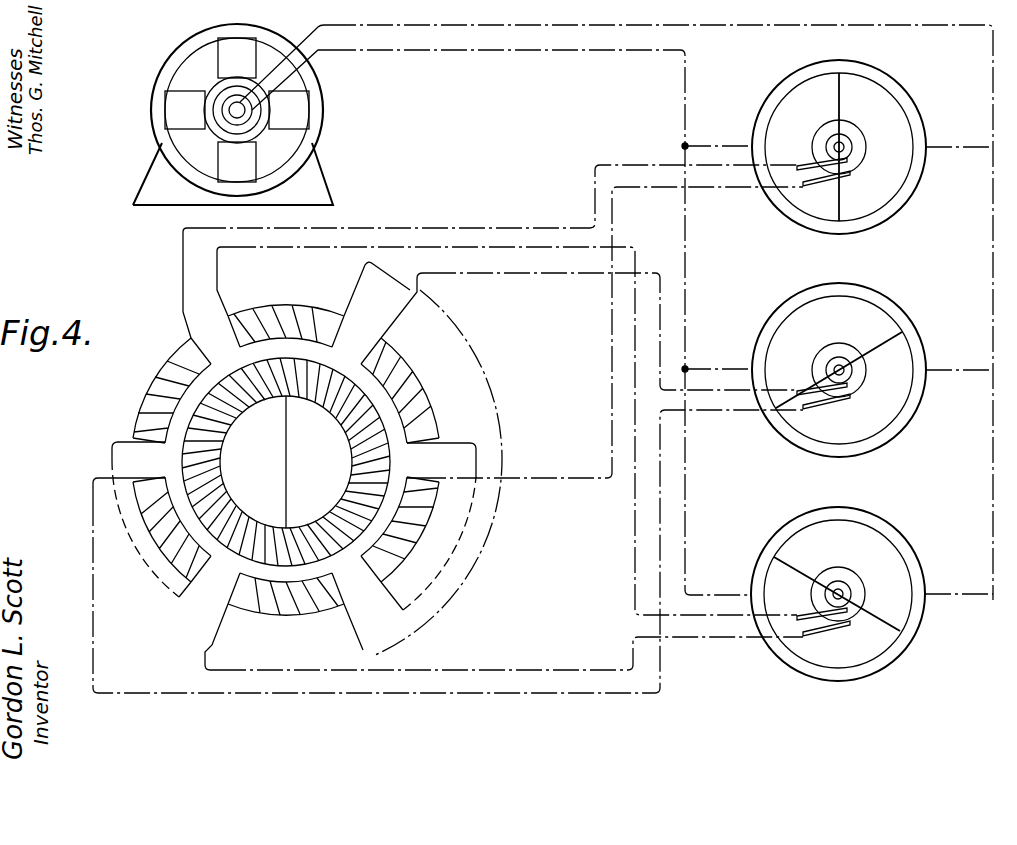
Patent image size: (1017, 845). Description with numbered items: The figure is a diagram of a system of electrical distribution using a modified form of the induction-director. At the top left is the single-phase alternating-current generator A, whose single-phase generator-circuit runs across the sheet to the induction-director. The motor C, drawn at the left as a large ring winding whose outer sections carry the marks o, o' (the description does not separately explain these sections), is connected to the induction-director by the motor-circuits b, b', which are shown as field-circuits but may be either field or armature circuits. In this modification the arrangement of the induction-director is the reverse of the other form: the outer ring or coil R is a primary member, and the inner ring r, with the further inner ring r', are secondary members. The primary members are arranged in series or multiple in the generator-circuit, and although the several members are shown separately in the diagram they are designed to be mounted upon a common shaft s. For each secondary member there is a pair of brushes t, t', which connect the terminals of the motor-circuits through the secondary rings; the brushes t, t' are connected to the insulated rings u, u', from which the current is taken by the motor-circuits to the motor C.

The single-phase alternating-current generator A is at (563, 312).
The motor C is at (286, 462).
The outer coil section o is at (285, 460).
The outer coil section o' is at (289, 460).
The motor-circuit b is at (493, 321).
The motor-circuit b' is at (448, 488).
The outer ring or coil R is at (839, 258).
The inner ring r is at (867, 147).
The inner ring r' is at (839, 356).
The common shaft s is at (812, 593).
The insulated ring u is at (838, 360).
The insulated ring u' is at (873, 377).
The brush t is at (812, 380).
The brush t' is at (826, 416).